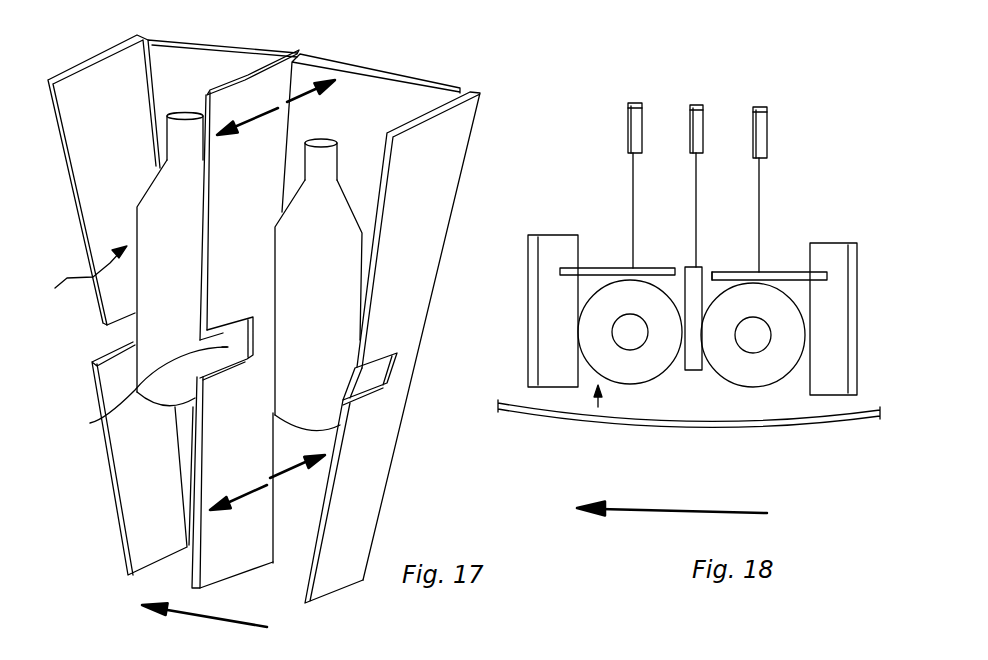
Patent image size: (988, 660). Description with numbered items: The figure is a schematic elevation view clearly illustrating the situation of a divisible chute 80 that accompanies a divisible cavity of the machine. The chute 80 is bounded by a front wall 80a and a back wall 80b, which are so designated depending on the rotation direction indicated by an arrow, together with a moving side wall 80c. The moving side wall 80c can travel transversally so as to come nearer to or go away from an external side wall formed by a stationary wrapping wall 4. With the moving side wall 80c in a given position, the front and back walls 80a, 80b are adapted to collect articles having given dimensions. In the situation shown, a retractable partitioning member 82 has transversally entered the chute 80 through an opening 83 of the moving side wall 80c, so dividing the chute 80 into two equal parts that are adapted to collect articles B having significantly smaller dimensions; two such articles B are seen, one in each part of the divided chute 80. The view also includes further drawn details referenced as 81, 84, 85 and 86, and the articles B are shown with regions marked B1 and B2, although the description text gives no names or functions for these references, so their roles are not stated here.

In FIG. 18, the stationary wrapping wall 4 is at (853, 427).
In FIG. 17, the chute 80 is at (74, 285).
In FIG. 18, the chute 80 is at (590, 420).
In FIG. 17, the front wall 80a is at (137, 500).
In FIG. 18, the front wall 80a is at (558, 387).
In FIG. 17, the back wall 80b is at (417, 252).
In FIG. 18, the back wall 80b is at (827, 387).
In FIG. 17, the moving side wall 80c is at (378, 88).
In FIG. 18, the moving side wall 80c is at (612, 270).
In FIG. 18, the drive rod 81 is at (693, 117).
In FIG. 17, the retractable partitioning member 82 is at (235, 97).
In FIG. 18, the retractable partitioning member 82 is at (692, 370).
In FIG. 17, the opening 83 is at (263, 565).
In FIG. 18, the opening 83 is at (710, 270).
In FIG. 17, the tab 84 is at (367, 378).
In FIG. 17, the slot 85 is at (110, 338).
In FIG. 17, the curved support arm 86 is at (132, 400).
In FIG. 17, the articles B is at (150, 203).
In FIG. 18, the articles B is at (627, 370).
In FIG. 17, the bottle neck B1 is at (182, 128).
In FIG. 17, the bottle bottom B2 is at (164, 398).